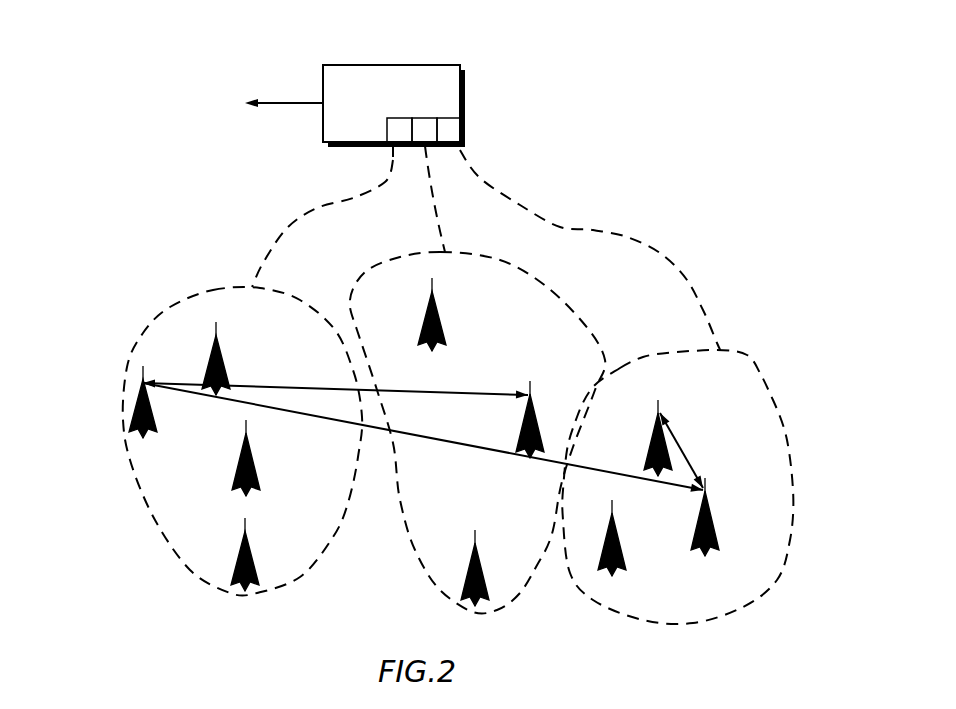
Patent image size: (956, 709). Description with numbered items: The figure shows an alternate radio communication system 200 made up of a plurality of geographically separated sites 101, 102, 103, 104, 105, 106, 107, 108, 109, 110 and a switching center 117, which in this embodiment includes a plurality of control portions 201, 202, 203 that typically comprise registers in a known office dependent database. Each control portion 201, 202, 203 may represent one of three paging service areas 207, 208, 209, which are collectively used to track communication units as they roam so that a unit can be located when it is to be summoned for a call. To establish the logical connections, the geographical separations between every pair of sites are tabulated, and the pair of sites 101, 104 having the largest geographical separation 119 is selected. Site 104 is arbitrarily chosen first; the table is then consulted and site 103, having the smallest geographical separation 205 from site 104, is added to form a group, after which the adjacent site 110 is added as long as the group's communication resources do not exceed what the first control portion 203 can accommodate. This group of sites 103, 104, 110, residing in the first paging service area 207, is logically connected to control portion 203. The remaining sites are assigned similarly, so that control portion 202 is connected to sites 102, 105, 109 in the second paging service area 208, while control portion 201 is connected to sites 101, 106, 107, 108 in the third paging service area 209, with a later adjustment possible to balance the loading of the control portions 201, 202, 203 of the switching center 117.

The site 101 is at (143, 381).
The site 102 is at (435, 290).
The site 103 is at (661, 413).
The site 104 is at (708, 487).
The site 105 is at (478, 546).
The site 106 is at (216, 332).
The site 107 is at (247, 434).
The site 108 is at (245, 520).
The site 109 is at (529, 396).
The site 110 is at (614, 503).
The switching center 117 is at (460, 68).
The geographical separation 119 is at (453, 443).
The radio communication system 200 is at (724, 209).
The control portion 201 is at (389, 123).
The control portion 202 is at (421, 117).
The control portion 203 is at (465, 127).
The geographical separation 205 is at (680, 440).
The first paging service area 207 is at (748, 354).
The second paging service area 208 is at (560, 295).
The third paging service area 209 is at (213, 290).